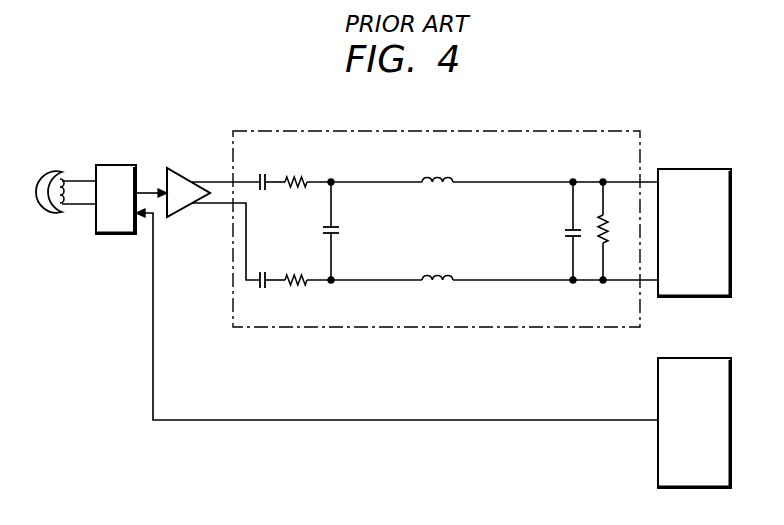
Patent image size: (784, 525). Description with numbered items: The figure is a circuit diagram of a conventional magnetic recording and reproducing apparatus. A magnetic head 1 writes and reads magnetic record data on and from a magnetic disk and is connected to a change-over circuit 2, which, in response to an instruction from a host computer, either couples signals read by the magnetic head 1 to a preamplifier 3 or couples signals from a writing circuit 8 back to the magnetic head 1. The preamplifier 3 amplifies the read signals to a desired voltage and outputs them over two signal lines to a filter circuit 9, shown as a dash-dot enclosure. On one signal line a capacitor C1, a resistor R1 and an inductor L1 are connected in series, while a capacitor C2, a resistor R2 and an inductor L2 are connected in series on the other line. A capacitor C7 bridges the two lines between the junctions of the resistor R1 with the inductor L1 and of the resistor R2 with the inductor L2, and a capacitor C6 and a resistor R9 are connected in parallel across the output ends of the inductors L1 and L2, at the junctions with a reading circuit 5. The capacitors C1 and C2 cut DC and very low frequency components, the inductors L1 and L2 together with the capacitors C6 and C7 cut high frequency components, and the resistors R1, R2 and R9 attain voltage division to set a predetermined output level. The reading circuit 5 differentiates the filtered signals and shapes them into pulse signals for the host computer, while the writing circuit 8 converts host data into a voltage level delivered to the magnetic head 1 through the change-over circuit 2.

The magnetic head 1 is at (50, 168).
The change-over circuit 2 is at (118, 165).
The preamplifier 3 is at (168, 168).
The reading circuit 5 is at (710, 169).
The writing circuit 8 is at (711, 358).
The filter circuit 9 is at (559, 126).
The capacitor C1 is at (262, 172).
The resistor R1 is at (296, 171).
The inductor L1 is at (437, 166).
The capacitor C7 is at (343, 231).
The capacitor C2 is at (262, 269).
The resistor R2 is at (296, 268).
The inductor L2 is at (437, 264).
The capacitor C6 is at (558, 231).
The resistor R9 is at (614, 231).